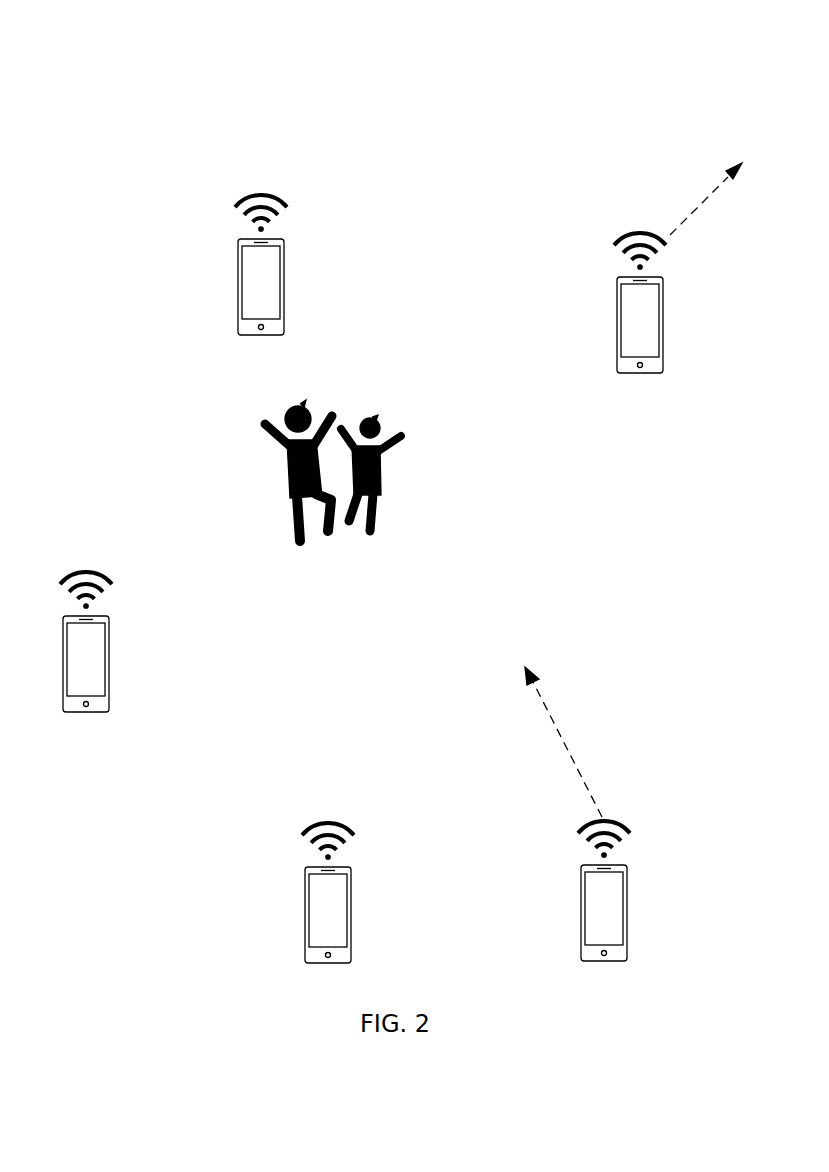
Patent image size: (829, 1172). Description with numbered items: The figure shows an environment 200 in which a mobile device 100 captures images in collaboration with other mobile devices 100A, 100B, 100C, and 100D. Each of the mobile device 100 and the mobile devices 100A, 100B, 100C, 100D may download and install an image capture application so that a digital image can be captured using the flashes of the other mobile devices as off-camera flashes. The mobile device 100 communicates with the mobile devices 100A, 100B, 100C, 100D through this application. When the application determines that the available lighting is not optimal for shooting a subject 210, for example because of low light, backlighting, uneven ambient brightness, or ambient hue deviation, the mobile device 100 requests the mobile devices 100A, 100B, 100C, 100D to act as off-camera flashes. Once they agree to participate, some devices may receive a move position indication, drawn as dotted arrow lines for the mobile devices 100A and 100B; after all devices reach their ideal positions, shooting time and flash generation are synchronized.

The environment 200 is at (558, 58).
The mobile device 100 is at (328, 963).
The mobile device 100A is at (604, 961).
The mobile device 100B is at (640, 373).
The mobile device 100C is at (261, 335).
The mobile device 100D is at (86, 712).
The subject 210 is at (373, 533).